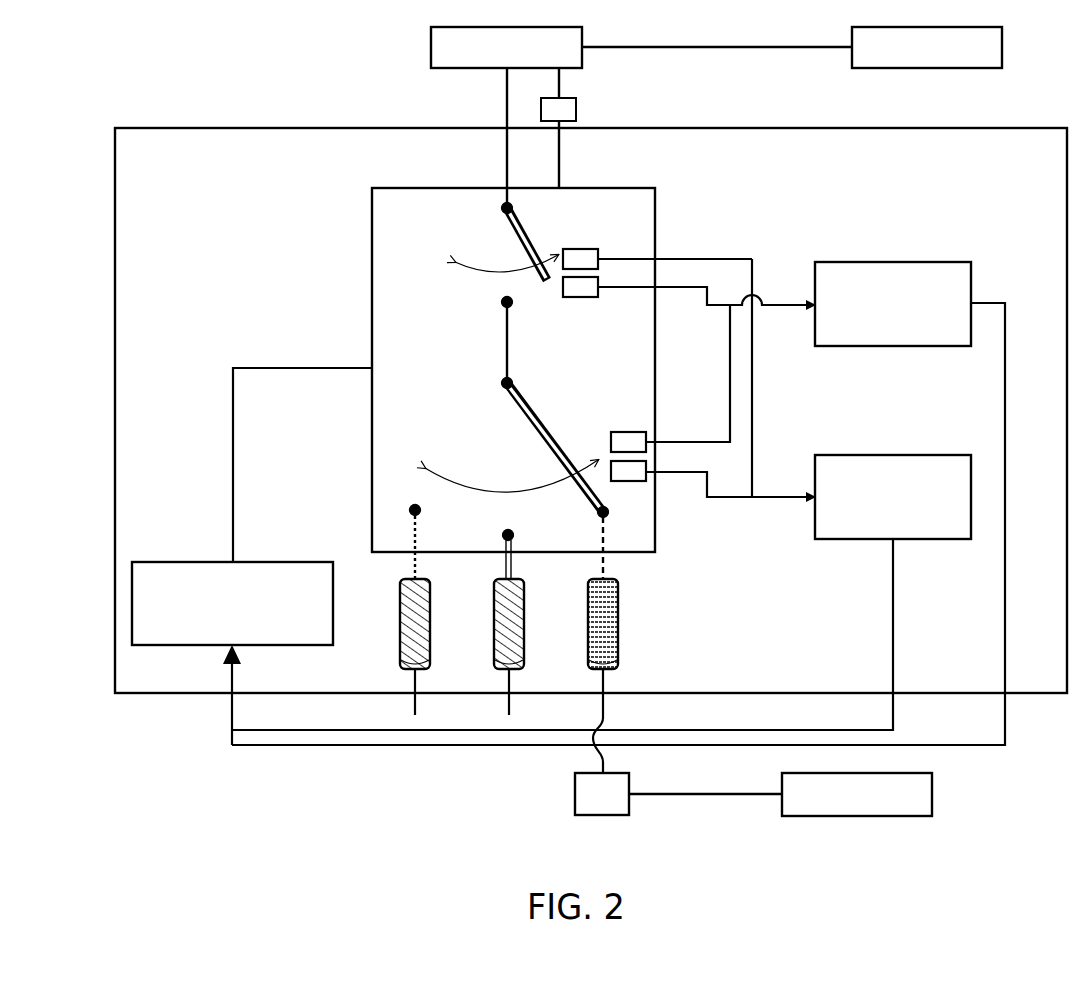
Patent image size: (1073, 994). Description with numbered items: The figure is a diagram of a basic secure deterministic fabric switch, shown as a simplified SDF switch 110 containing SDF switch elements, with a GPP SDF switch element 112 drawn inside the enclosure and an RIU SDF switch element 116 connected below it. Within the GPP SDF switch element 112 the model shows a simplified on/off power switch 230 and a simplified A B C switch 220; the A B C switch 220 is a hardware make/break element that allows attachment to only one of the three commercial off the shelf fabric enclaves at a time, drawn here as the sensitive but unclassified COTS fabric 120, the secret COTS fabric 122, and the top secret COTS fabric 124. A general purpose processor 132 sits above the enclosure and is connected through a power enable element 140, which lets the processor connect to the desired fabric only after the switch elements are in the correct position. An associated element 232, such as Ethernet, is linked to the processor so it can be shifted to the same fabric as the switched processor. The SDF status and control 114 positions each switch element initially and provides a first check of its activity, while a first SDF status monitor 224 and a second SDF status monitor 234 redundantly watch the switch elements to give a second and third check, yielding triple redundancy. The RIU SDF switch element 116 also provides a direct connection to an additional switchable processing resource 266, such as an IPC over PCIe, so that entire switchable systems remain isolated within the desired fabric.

The SDF switch 110 is at (725, 128).
The GPP SDF switch element 112 is at (623, 187).
The SDF status and control 114 is at (278, 562).
The RIU SDF switch element 116 is at (629, 808).
The sensitive but unclassified COTS fabric 120 is at (588, 615).
The secret COTS fabric 122 is at (494, 615).
The top secret COTS fabric 124 is at (400, 615).
The general purpose processor 132 is at (431, 45).
The power enable element 140 is at (576, 112).
The A B C switch 220 is at (548, 428).
The first SDF status monitor 224 is at (897, 455).
The on/off power switch 230 is at (532, 242).
The associated element 232 is at (1002, 50).
The second SDF status monitor 234 is at (897, 262).
The additional switchable processing resource 266 is at (932, 808).